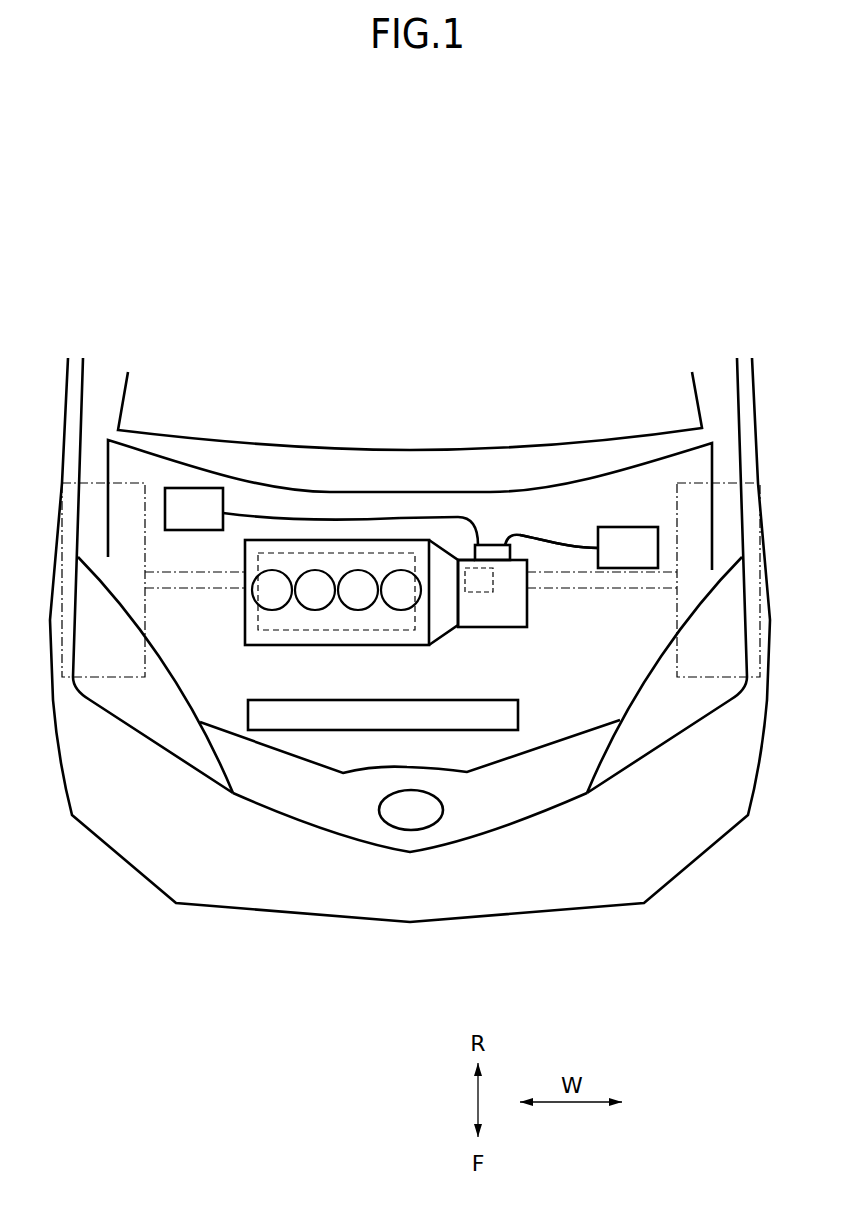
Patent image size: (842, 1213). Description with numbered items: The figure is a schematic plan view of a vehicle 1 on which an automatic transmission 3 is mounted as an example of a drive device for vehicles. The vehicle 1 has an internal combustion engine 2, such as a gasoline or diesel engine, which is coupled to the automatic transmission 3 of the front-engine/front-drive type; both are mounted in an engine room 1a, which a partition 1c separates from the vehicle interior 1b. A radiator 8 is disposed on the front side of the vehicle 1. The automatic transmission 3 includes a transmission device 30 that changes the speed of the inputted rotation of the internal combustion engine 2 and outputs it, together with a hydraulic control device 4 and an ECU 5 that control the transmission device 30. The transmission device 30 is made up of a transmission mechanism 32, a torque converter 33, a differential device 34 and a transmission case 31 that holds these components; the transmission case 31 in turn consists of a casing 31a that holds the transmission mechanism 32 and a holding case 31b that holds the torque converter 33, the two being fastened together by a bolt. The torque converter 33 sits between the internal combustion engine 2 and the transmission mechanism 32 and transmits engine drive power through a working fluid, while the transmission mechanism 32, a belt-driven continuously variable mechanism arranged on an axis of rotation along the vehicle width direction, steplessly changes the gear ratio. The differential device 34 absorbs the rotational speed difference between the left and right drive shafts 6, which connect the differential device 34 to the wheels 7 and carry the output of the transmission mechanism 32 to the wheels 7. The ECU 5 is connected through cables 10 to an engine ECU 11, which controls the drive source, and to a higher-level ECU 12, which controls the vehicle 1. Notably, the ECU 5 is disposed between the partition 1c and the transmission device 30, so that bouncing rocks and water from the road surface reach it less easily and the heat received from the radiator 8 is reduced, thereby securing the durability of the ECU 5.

The vehicle 1 is at (613, 307).
The engine room 1a is at (590, 710).
The vehicle interior 1b is at (608, 410).
The partition 1c is at (568, 458).
The internal combustion engine 2 is at (337, 610).
The automatic transmission 3 is at (541, 526).
The hydraulic control device 4 is at (337, 632).
The ECU 5 is at (490, 545).
The drive shafts 6 is at (181, 592).
The wheels 7 is at (115, 680).
The radiator 8 is at (320, 732).
The cables 10 is at (327, 517).
The engine ECU 11 is at (175, 488).
The higher-level ECU 12 is at (621, 527).
The transmission device 30 is at (499, 460).
The transmission case 31 is at (506, 628).
The casing 31a is at (516, 614).
The holding case 31b is at (445, 637).
The transmission mechanism 32 is at (522, 555).
The torque converter 33 is at (442, 545).
The differential device 34 is at (460, 557).